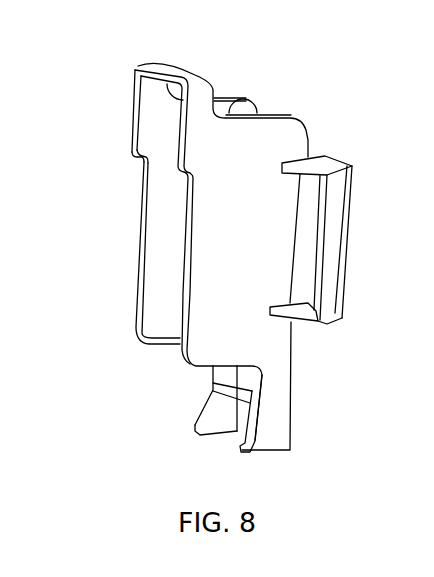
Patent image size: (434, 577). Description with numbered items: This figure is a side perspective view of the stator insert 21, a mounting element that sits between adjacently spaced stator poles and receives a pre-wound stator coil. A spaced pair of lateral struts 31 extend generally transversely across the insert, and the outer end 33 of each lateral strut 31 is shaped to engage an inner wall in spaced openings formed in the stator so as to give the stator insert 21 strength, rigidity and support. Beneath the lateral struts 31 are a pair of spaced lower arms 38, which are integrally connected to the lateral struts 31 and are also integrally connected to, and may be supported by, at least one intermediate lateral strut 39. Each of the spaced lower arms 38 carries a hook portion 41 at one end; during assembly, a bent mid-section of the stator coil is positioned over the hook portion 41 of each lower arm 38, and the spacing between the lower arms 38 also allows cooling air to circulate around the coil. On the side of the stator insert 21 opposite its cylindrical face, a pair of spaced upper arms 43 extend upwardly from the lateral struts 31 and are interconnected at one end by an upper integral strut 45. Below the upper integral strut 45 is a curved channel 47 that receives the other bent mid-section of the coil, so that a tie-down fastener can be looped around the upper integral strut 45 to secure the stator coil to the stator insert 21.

The stator insert 21 is at (318, 100).
The lateral strut 31 is at (157, 210).
The outer end 33 is at (136, 258).
The lower arm 38 is at (213, 422).
The intermediate lateral strut 39 is at (237, 393).
The hook portion 41 is at (196, 426).
The upper arm 43 is at (231, 110).
The upper integral strut 45 is at (173, 72).
The curved channel 47 is at (130, 161).